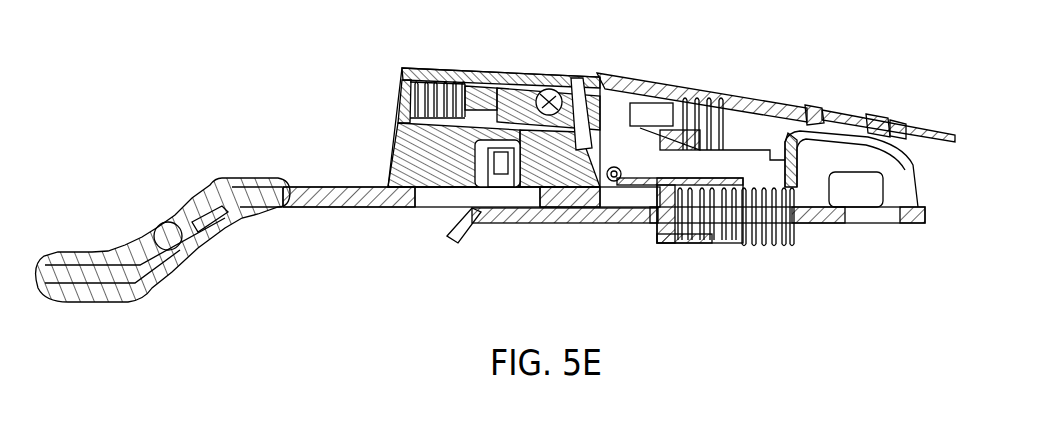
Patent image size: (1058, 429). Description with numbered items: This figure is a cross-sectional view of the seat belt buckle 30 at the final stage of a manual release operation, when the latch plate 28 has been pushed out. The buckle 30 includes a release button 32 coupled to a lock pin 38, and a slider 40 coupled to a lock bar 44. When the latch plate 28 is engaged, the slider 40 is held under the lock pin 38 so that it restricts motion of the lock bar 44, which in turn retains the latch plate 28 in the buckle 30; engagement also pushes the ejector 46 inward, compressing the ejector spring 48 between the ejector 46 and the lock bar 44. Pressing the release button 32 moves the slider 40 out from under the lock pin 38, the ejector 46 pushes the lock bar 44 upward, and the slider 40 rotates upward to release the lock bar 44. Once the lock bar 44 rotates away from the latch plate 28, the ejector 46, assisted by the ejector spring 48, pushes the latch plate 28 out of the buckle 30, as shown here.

The latch plate 28 is at (357, 199).
The buckle 30 is at (333, 45).
The release button 32 is at (413, 128).
The lock pin 38 is at (554, 100).
The slider 40 is at (592, 117).
The lock bar 44 is at (738, 128).
The ejector 46 is at (647, 205).
The ejector spring 48 is at (740, 243).